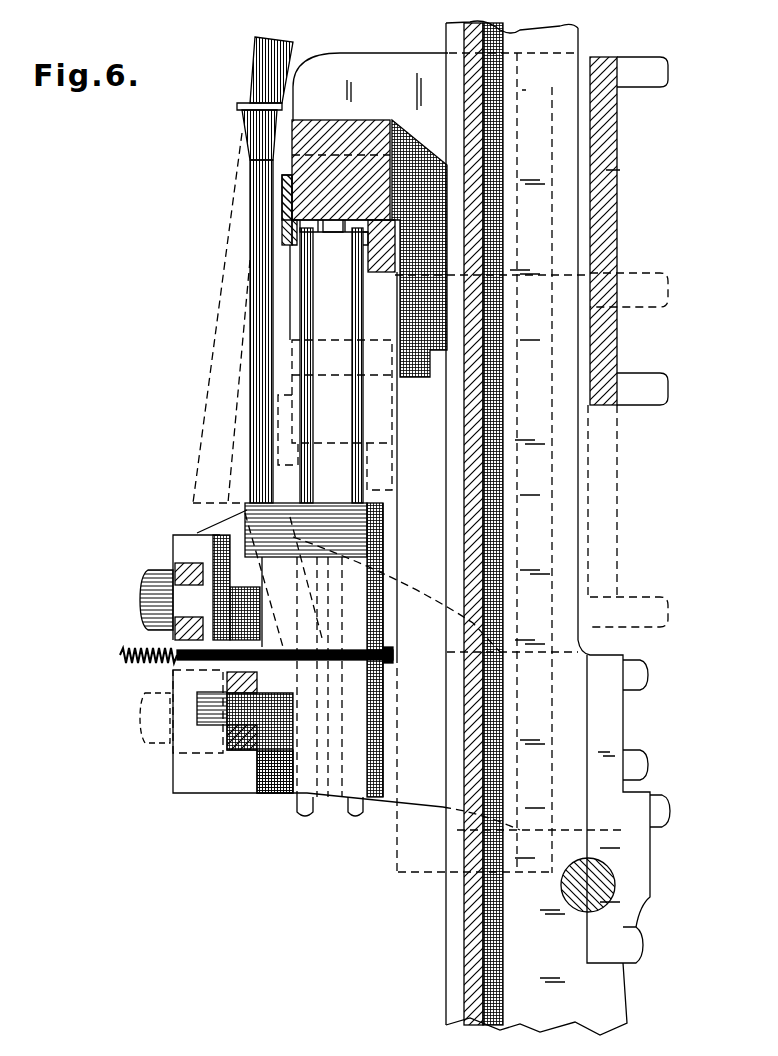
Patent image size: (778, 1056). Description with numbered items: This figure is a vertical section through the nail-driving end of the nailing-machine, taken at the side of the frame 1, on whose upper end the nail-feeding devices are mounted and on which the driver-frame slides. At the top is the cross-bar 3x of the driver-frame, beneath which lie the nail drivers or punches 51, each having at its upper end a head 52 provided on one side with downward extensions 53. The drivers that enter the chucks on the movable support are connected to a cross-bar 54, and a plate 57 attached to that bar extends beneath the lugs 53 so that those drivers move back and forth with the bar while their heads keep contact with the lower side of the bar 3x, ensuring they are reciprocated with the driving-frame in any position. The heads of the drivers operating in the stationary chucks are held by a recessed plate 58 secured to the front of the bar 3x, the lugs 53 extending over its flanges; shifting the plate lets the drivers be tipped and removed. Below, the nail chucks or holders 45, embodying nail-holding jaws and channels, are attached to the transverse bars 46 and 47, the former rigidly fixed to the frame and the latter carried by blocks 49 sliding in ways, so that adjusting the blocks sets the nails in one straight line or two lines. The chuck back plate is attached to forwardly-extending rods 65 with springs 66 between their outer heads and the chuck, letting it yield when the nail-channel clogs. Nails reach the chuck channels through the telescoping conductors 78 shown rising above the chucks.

The side of the frame 1 is at (532, 528).
The cross-bar of the driver-frame 3x is at (370, 215).
The nail chucks or holders 45 is at (238, 518).
The transverse bar 46 is at (176, 566).
The transverse bar 47 is at (228, 753).
The blocks 49 is at (235, 767).
The nail drivers or punches 51 is at (354, 407).
The head 52 is at (330, 232).
The downward extensions 53 is at (292, 228).
The cross-bar 54 is at (377, 257).
The plate 57 is at (372, 270).
The recessed plate 58 is at (282, 193).
The rods 65 is at (120, 655).
The springs 66 is at (147, 665).
The telescoping conductors 78 is at (253, 127).